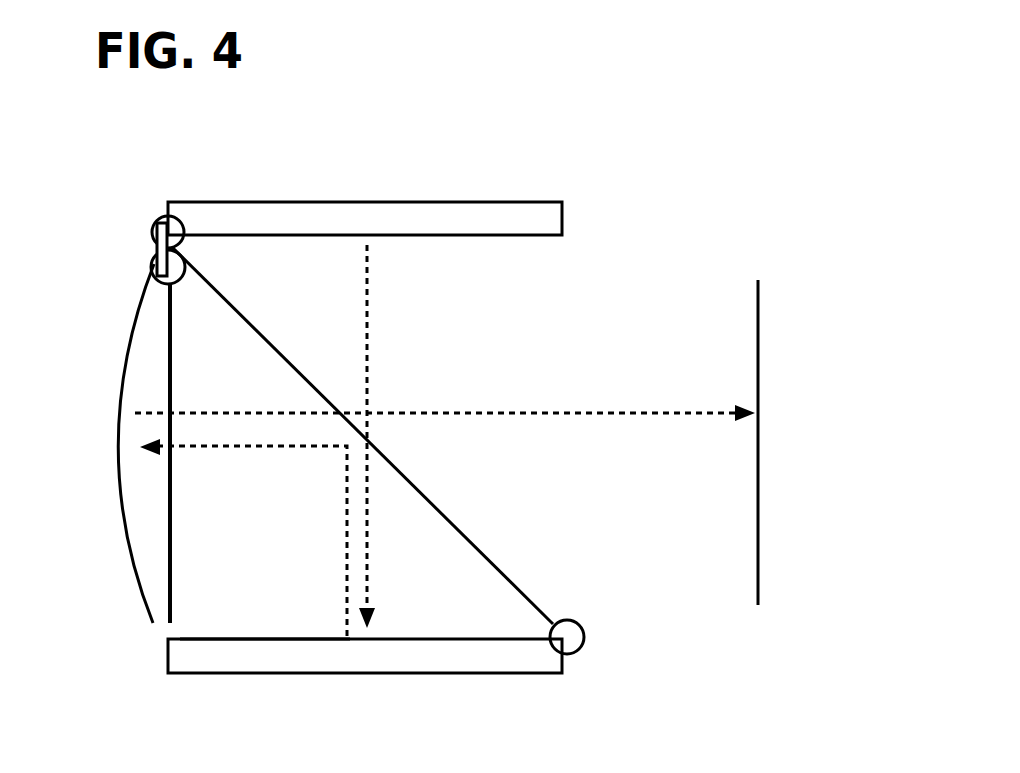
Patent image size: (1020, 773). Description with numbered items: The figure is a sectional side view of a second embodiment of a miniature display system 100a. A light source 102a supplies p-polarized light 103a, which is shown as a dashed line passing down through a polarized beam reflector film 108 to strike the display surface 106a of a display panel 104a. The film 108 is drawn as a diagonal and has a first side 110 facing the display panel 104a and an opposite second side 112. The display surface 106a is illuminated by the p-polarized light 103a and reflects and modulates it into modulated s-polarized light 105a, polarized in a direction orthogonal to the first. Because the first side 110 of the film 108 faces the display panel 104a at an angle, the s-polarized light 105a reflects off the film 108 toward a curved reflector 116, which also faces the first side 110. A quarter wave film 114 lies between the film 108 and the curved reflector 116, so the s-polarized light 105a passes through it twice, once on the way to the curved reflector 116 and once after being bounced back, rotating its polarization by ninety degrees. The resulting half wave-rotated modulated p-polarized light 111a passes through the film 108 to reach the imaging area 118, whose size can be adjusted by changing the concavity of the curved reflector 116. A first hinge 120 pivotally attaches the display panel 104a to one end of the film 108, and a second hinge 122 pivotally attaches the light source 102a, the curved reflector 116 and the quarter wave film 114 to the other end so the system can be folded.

The miniature display system 100a is at (700, 105).
The light source 102a is at (242, 218).
The p-polarized light 103a is at (367, 316).
The display panel 104a is at (505, 657).
The modulated s-polarized light 105a is at (347, 517).
The display surface 106a is at (203, 640).
The polarized beam reflector film 108 is at (530, 598).
The first side 110 is at (482, 590).
The half wave-rotated modulated p-polarized light 111a is at (490, 413).
The second side 112 is at (510, 553).
The quarter wave film 114 is at (172, 556).
The curved reflector 116 is at (135, 317).
The imaging area 118 is at (758, 347).
The first hinge 120 is at (572, 646).
The second hinge 122 is at (122, 243).